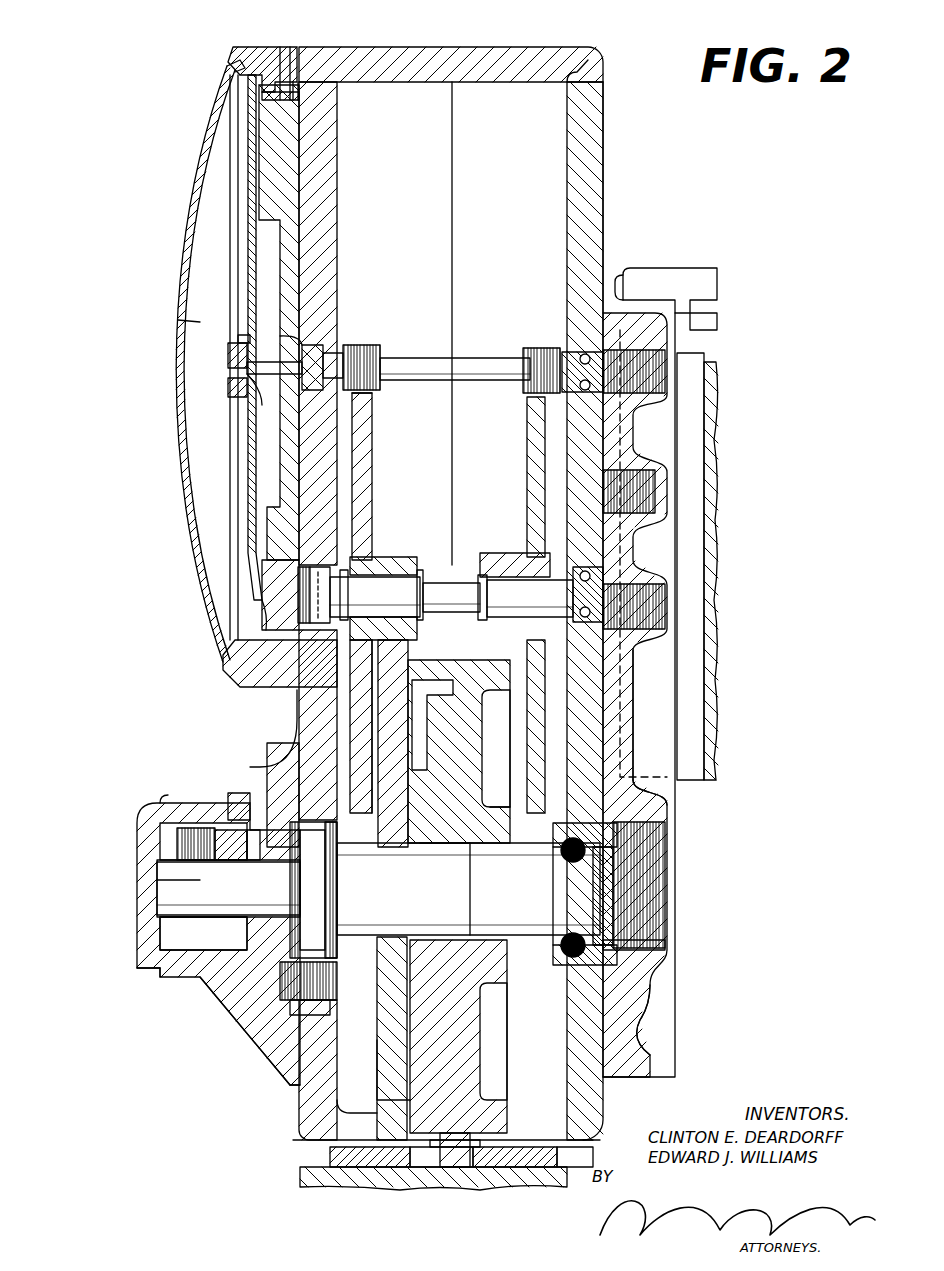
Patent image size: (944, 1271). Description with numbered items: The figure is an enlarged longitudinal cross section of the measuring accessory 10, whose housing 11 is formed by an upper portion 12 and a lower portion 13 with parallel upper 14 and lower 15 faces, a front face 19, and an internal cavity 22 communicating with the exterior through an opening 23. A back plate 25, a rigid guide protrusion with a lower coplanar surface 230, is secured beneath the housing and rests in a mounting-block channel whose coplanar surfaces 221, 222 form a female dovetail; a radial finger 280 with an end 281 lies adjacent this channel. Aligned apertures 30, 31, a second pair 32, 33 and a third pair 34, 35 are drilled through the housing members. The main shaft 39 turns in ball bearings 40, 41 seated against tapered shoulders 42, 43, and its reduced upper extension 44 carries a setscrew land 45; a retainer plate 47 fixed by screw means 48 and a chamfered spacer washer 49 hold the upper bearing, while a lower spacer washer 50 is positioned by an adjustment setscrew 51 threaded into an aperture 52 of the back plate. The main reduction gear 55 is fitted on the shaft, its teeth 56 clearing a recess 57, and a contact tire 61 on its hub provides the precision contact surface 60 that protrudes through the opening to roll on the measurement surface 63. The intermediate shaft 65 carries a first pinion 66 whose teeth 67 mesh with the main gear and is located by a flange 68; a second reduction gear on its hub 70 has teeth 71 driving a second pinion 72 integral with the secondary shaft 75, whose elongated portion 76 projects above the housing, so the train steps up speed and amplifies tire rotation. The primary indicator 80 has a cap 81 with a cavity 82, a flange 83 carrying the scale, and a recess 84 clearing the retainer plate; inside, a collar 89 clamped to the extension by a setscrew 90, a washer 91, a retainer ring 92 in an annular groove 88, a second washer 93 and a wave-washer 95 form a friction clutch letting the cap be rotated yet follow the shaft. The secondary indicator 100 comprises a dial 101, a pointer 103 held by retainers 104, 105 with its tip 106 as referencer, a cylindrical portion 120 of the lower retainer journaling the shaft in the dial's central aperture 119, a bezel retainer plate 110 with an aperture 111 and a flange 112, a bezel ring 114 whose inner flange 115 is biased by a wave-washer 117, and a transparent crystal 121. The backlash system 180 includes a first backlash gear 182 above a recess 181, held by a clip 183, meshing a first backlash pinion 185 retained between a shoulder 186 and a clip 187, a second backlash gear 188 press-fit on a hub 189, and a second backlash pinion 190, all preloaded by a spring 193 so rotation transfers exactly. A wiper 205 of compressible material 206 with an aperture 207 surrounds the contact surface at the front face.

The accessory 10 is at (165, 650).
The housing 11 is at (590, 160).
The upper portion 12 is at (330, 110).
The lower portion 13 is at (556, 65).
The upper face 14 is at (275, 720).
The lower face 15 is at (605, 190).
The front face 19 is at (340, 1160).
The internal cavity 22 is at (425, 206).
The opening 23 is at (470, 1185).
The back plate 25 is at (642, 1060).
The aperture 30 is at (345, 975).
The aperture 31 is at (555, 955).
The aperture 32 is at (323, 575).
The aperture 33 is at (615, 660).
The aperture 34 is at (318, 345).
The aperture 35 is at (570, 352).
The main shaft 39 is at (492, 873).
The bearing 40 is at (355, 855).
The bearing 41 is at (552, 830).
The tapered shoulder 42 is at (328, 870).
The tapered shoulder 43 is at (590, 870).
The reduced diameter upper extension 44 is at (170, 877).
The setscrew land 45 is at (250, 870).
The retainer plate 47 is at (283, 760).
The screw means 48 is at (335, 995).
The spacer washer 49 is at (335, 908).
The spacer washer 50 is at (640, 808).
The adjustment and setscrew 51 is at (650, 840).
The aperture 52 is at (670, 940).
The main reduction gear 55 is at (487, 1092).
The teeth 56 is at (575, 1159).
The recess 57 is at (598, 1135).
The contact surface 60 is at (460, 578).
The contact tire 61 is at (496, 748).
The measurement surface 63 is at (430, 1185).
The intermediate shaft 65 is at (490, 588).
The first pinion 66 is at (500, 560).
The teeth 67 is at (540, 480).
The radial shoulder 68 is at (483, 575).
The hub 70 is at (560, 585).
The teeth 71 is at (510, 812).
The second pinion 72 is at (535, 348).
The secondary shaft 75 is at (440, 360).
The reduced diameter portion 76 is at (285, 335).
The main shaft measurement indicator 80 is at (195, 1010).
The cap 81 is at (140, 938).
The interior cavity 82 is at (160, 800).
The radial flange 83 is at (275, 1080).
The recess 84 is at (245, 1015).
The annular groove 88 is at (238, 800).
The collar 89 is at (160, 896).
The setscrew 90 is at (197, 835).
The washer 91 is at (160, 945).
The spring retainer ring 92 is at (215, 975).
The second washer 93 is at (225, 870).
The wave-washer 95 is at (200, 955).
The secondary measurement indicator 100 is at (205, 185).
The dial 101 is at (230, 150).
The pointer 103 is at (245, 445).
The retainer 104 is at (228, 372).
The lower pointer retainer 105 is at (240, 343).
The tip 106 is at (240, 593).
The bezel ring retainer plate 110 is at (285, 170).
The central aperture 111 is at (370, 410).
The radial flange 112 is at (283, 70).
The bezel ring 114 is at (245, 60).
The inner peripheral flange 115 is at (298, 62).
The wave-washer 117 is at (300, 92).
The central aperture 119 is at (262, 372).
The cylindrical portion 120 is at (250, 405).
The transparent crystal 121 is at (178, 322).
The backlash system 180 is at (395, 485).
The circular recess 181 is at (445, 780).
The first backlash reduction gear 182 is at (380, 1015).
The retaining ring 183 is at (400, 860).
The first backlash pinion 185 is at (395, 560).
The shoulder 186 is at (410, 595).
The retainer clip 187 is at (346, 580).
The second backlash reduction gear 188 is at (372, 445).
The hub 189 is at (263, 700).
The second backlash pinion 190 is at (365, 345).
The spring 193 is at (405, 1045).
The wiper 205 is at (340, 1175).
The compressible wiper material 206 is at (535, 1170).
The aperture 207 is at (400, 1170).
The coplanar surface 221 is at (690, 672).
The coplanar surface 222 is at (718, 550).
The coplanar surface 230 is at (625, 722).
The radial finger 280 is at (676, 292).
The end 281 is at (625, 292).